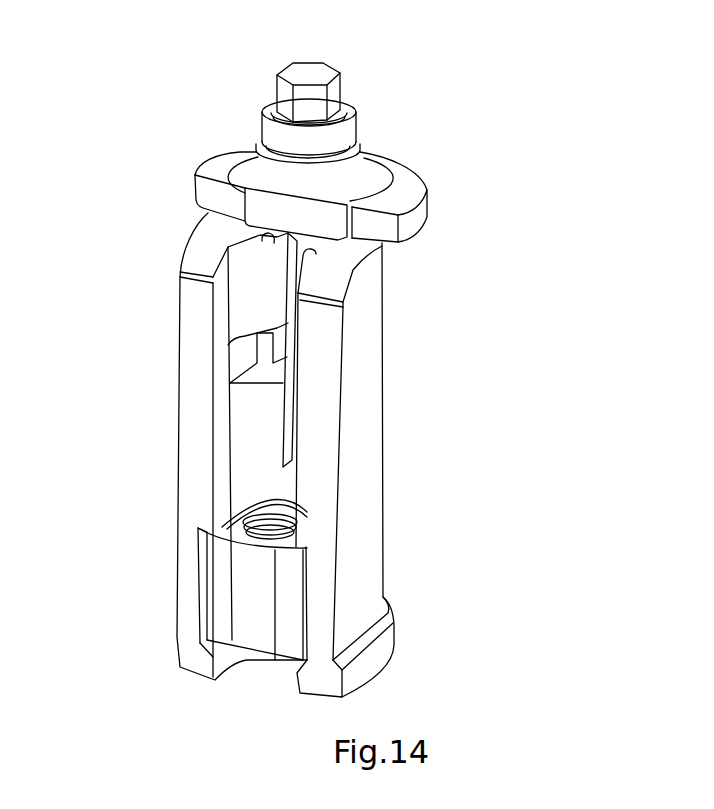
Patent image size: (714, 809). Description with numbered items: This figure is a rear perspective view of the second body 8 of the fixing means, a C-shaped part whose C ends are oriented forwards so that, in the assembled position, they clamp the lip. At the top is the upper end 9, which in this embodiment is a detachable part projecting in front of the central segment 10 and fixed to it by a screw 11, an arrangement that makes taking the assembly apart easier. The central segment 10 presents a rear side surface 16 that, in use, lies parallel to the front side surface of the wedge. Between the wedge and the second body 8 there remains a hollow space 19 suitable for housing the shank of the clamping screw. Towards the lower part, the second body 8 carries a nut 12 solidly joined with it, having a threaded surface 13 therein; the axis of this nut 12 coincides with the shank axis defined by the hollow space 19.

The second body 8 is at (260, 455).
The upper end 9 is at (407, 188).
The central segment 10 is at (373, 392).
The screw 11 is at (308, 77).
The nut 12 is at (187, 580).
The threaded surface 13 is at (243, 523).
The rear side surface 16 is at (197, 425).
The hollow space 19 is at (260, 407).